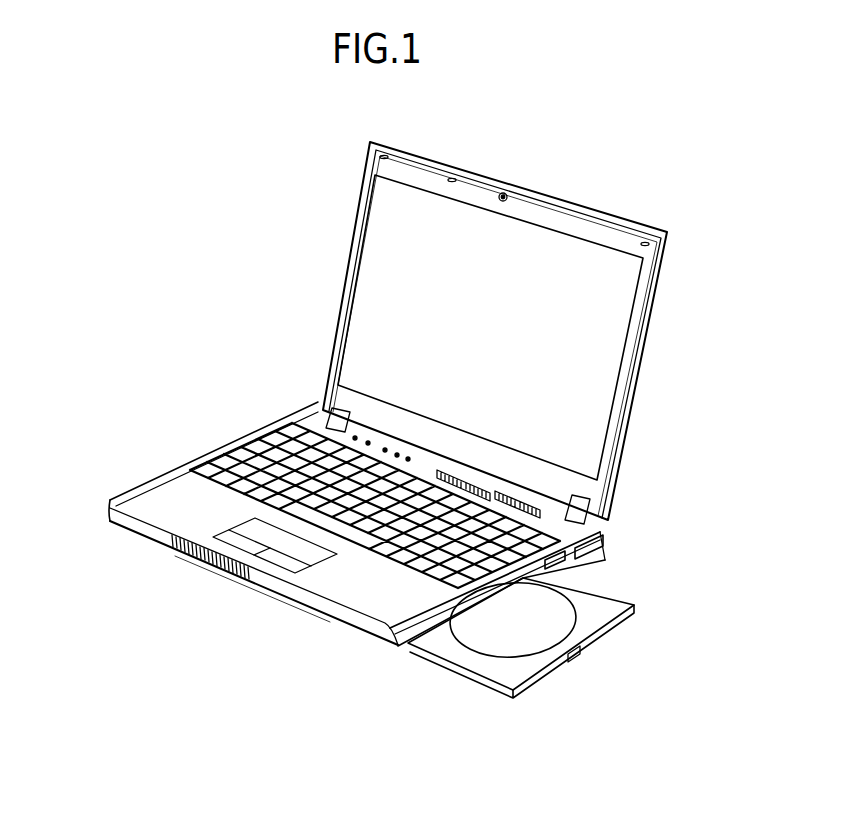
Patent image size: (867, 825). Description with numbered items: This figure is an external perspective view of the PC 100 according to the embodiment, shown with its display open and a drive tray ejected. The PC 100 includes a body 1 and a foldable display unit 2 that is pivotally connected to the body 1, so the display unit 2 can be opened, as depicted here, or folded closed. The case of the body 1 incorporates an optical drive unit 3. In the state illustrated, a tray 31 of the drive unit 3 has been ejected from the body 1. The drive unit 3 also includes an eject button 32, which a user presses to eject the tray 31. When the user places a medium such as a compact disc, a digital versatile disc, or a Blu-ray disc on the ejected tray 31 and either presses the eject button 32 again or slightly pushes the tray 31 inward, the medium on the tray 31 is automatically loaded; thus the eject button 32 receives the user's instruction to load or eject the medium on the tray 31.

The PC 100 is at (293, 160).
The body 1 is at (147, 490).
The foldable display unit 2 is at (672, 252).
The optical drive unit 3 is at (406, 649).
The tray 31 is at (598, 604).
The eject button 32 is at (580, 654).